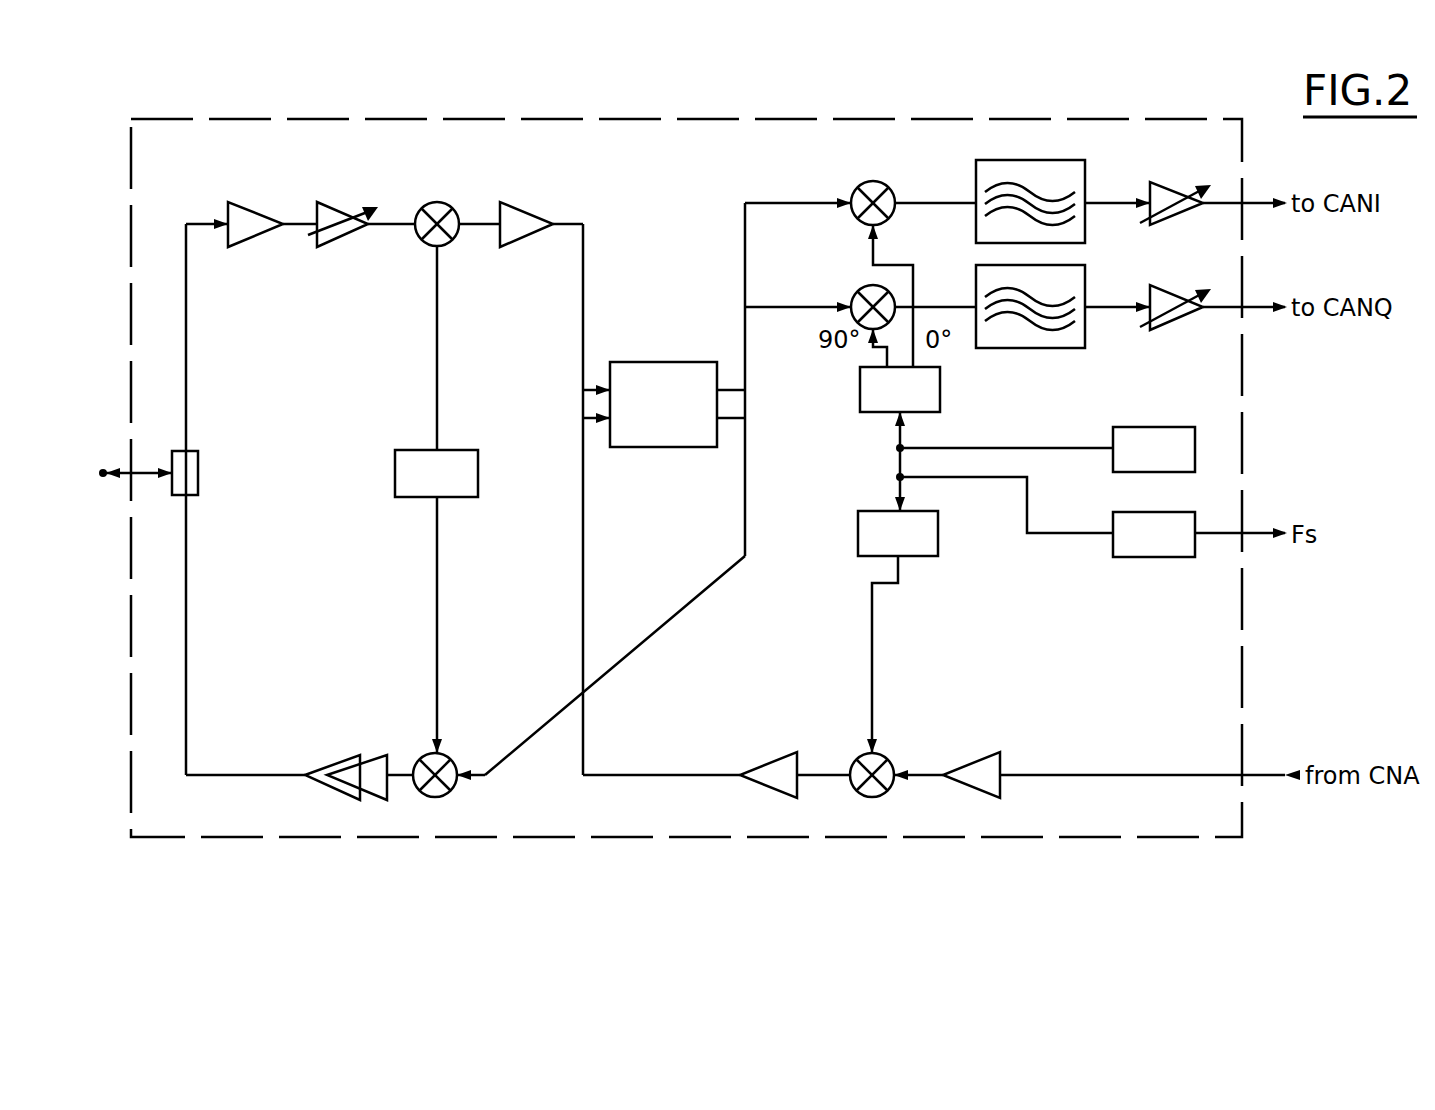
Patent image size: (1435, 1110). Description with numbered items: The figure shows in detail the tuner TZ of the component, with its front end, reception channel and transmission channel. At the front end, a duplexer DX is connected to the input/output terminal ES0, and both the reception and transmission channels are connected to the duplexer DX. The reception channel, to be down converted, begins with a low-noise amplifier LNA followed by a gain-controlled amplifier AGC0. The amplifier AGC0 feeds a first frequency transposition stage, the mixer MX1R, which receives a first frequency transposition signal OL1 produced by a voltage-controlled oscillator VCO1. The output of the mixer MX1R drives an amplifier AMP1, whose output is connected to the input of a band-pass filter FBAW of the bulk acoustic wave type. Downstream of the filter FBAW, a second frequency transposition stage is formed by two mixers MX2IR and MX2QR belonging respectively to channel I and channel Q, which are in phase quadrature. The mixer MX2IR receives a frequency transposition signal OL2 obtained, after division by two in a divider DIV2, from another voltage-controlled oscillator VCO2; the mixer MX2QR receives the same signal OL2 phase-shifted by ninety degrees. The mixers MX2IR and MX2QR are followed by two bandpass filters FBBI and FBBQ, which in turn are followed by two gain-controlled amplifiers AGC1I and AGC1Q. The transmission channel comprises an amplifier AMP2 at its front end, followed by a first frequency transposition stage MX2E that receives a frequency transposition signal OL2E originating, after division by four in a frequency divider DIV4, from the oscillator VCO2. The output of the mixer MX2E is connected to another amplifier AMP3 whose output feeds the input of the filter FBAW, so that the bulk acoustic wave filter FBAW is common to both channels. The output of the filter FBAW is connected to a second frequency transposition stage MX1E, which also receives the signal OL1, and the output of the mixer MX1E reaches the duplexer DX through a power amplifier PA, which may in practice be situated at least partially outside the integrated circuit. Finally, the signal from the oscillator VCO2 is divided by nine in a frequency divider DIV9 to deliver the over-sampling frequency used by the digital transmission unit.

The low-noise amplifier LNA is at (254, 206).
The gain-controlled amplifier AGC0 is at (342, 208).
The mixer MX1R is at (434, 201).
The amplifier AMP1 is at (527, 208).
The first frequency transposition signal OL1 is at (435, 352).
The voltage-controlled oscillator VCO1 is at (436, 473).
The input/output terminal ES0 is at (103, 470).
The duplexer DX is at (198, 476).
The power amplifier PA is at (334, 742).
The second frequency transposition stage MX1E is at (420, 793).
The band-pass filter of the bulk acoustic wave type FBAW is at (663, 404).
The mixer MX2IR is at (870, 179).
The mixer MX2QR is at (857, 289).
The frequency transposition signal OL2 is at (876, 243).
The divider DIV2 is at (860, 393).
The frequency divider DIV4 is at (858, 536).
The frequency transposition signal OL2E is at (872, 632).
The first frequency transposition stage MX2E is at (857, 793).
The amplifier AMP3 is at (767, 752).
The amplifier AMP2 is at (973, 752).
The bandpass filter FBBI is at (993, 160).
The bandpass filter FBBQ is at (1030, 348).
The gain-controlled amplifier AGC1I is at (1173, 188).
The gain-controlled amplifier AGC1Q is at (1173, 292).
The voltage-controlled oscillator VCO2 is at (1154, 449).
The frequency divider DIV9 is at (1115, 557).
The tuner TZ is at (1246, 468).